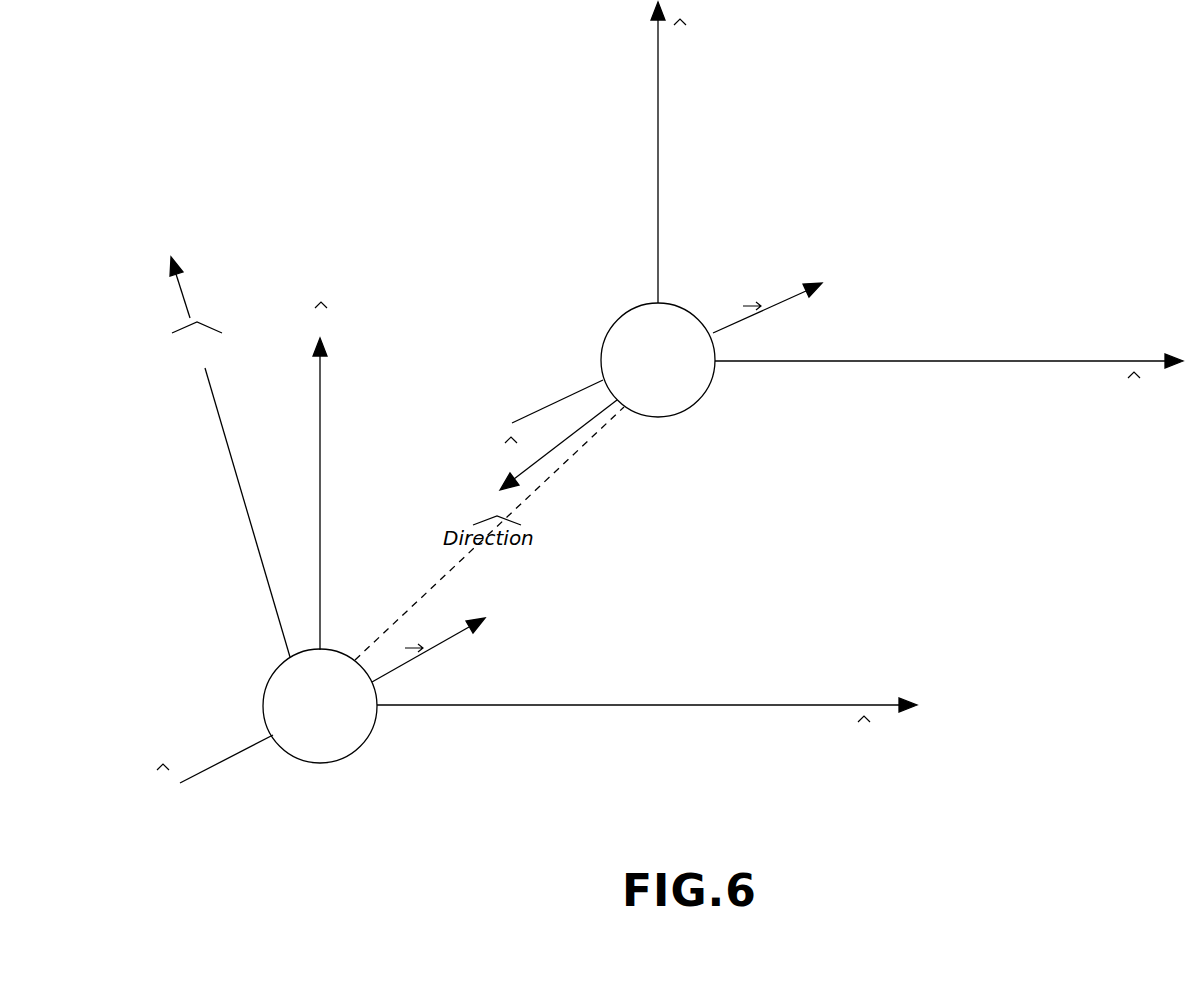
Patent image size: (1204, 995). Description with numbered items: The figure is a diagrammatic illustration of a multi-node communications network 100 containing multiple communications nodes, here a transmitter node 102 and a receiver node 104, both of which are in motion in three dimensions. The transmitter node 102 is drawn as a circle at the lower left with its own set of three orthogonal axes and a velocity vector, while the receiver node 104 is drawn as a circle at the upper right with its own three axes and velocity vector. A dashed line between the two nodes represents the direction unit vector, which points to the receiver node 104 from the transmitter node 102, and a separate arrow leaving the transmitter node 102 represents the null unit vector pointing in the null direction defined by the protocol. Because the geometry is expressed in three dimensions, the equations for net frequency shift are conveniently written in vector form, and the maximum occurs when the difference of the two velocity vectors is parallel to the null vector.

The multi-node communications network 100 is at (278, 108).
The transmitter node 102 is at (318, 763).
The receiver node 104 is at (618, 320).